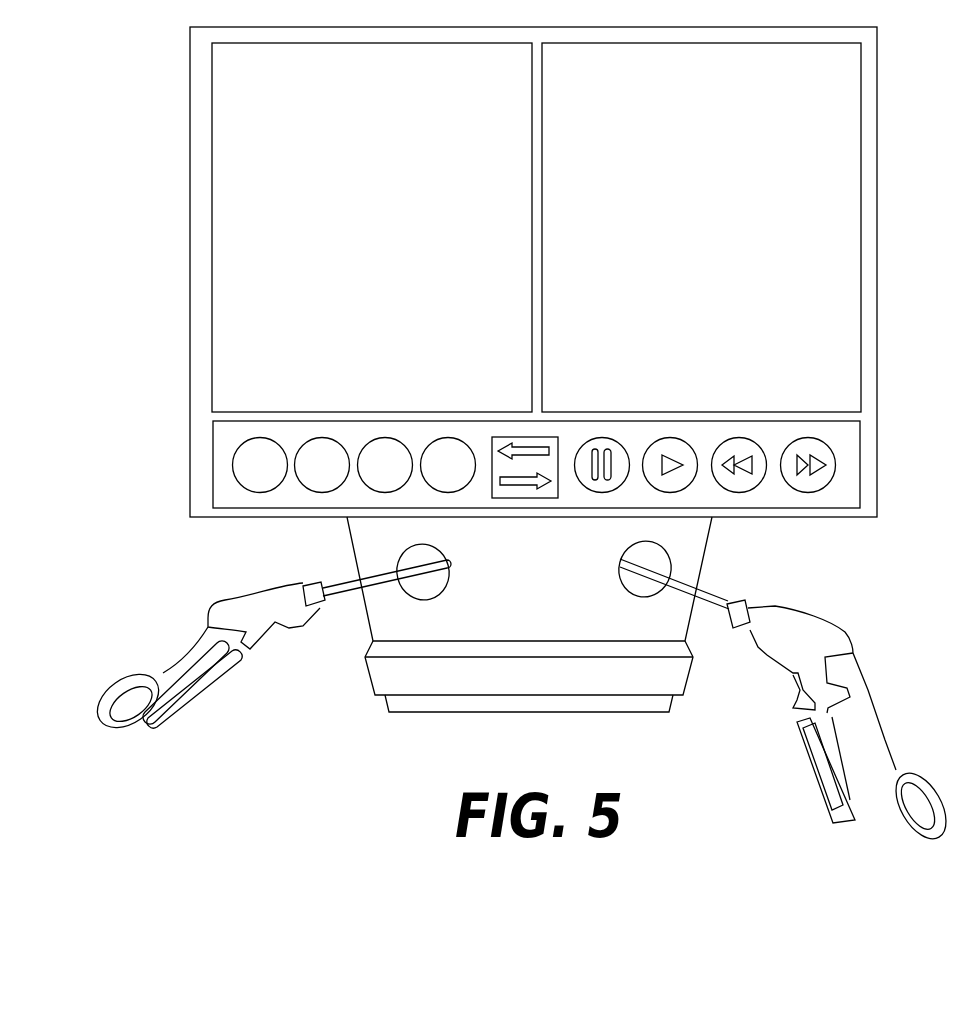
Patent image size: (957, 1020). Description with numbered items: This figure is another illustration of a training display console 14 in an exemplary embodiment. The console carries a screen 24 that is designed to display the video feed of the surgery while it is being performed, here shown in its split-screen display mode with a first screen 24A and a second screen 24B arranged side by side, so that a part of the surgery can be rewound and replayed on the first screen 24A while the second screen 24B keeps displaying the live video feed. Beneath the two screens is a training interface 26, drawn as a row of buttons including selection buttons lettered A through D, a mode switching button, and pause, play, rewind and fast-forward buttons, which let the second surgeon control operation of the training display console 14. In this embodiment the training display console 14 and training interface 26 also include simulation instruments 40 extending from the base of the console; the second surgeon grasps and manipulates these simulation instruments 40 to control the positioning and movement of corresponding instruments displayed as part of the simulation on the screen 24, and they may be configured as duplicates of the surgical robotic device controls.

The training display console 14 is at (190, 260).
The screen 24 is at (484, 224).
The first screen 24A is at (390, 240).
The second screen 24B is at (735, 236).
The training interface 26 is at (213, 468).
The simulation instruments 40 is at (168, 581).